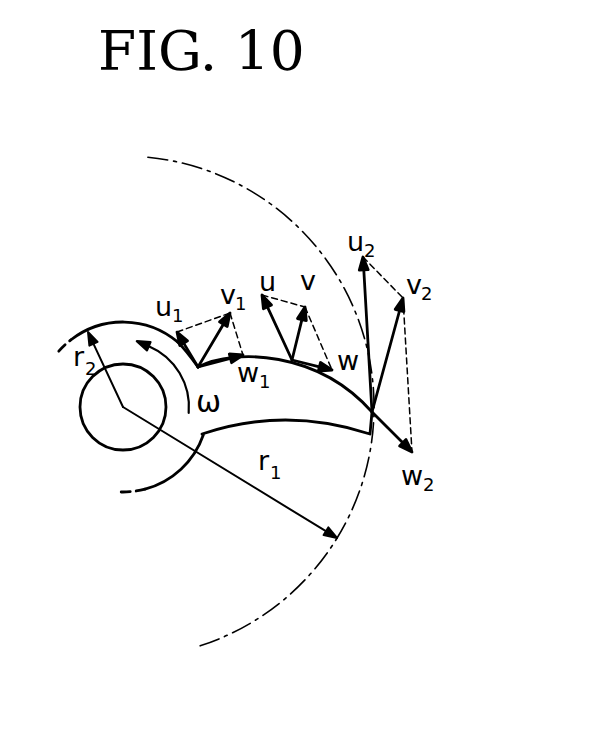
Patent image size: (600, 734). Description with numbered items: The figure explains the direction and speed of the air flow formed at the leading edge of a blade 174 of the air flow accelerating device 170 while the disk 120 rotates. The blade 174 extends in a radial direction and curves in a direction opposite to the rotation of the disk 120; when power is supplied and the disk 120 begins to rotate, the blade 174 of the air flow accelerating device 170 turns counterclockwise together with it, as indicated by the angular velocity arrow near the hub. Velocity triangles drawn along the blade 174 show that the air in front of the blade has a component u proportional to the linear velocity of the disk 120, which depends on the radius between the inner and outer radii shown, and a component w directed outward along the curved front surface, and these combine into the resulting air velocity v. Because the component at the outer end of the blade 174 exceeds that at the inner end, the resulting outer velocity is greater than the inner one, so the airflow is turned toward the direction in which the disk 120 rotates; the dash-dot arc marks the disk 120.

The air flow accelerating device 170 is at (114, 520).
The blade 174 is at (287, 410).
The disk 120 is at (260, 572).